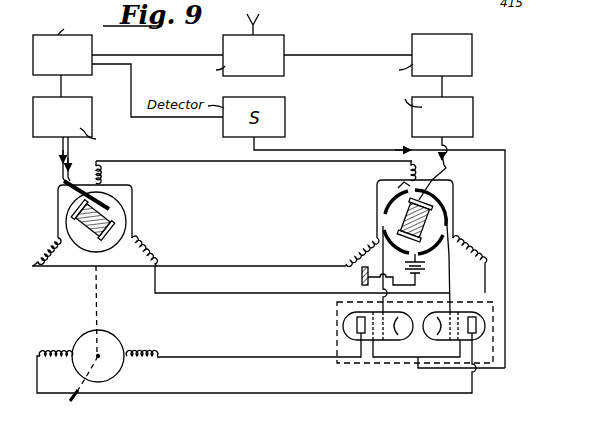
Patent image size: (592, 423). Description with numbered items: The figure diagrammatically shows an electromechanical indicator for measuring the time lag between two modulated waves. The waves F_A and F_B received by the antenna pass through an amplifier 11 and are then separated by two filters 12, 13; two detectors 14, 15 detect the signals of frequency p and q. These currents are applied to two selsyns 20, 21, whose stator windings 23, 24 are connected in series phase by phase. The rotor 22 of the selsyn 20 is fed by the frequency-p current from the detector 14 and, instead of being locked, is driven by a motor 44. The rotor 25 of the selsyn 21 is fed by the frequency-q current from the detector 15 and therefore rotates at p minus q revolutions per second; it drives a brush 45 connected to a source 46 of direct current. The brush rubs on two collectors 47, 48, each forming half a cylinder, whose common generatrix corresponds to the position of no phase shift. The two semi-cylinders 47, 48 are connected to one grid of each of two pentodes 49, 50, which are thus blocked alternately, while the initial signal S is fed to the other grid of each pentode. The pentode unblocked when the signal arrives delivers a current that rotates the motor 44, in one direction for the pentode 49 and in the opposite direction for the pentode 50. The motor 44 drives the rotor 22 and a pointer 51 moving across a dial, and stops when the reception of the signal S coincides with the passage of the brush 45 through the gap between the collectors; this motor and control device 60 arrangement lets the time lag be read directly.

The amplifier 11 is at (287, 44).
The filter 12 is at (94, 48).
The filter 13 is at (411, 48).
The detector 14 is at (94, 105).
The detector 15 is at (411, 127).
The selsyn 20 is at (150, 201).
The selsyn 21 is at (357, 208).
The rotor 22 is at (113, 228).
The winding 23 is at (60, 270).
The spring 24 is at (456, 224).
The rotor 25 is at (431, 207).
The motor 44 is at (121, 341).
The brush 45 is at (427, 269).
The source of direct current 46 is at (420, 270).
The collector 47 is at (401, 188).
The collector 48 is at (448, 206).
The pentode 49 is at (343, 336).
The pentode 50 is at (487, 336).
The pointer 51 is at (98, 384).
The control device 60 is at (494, 305).